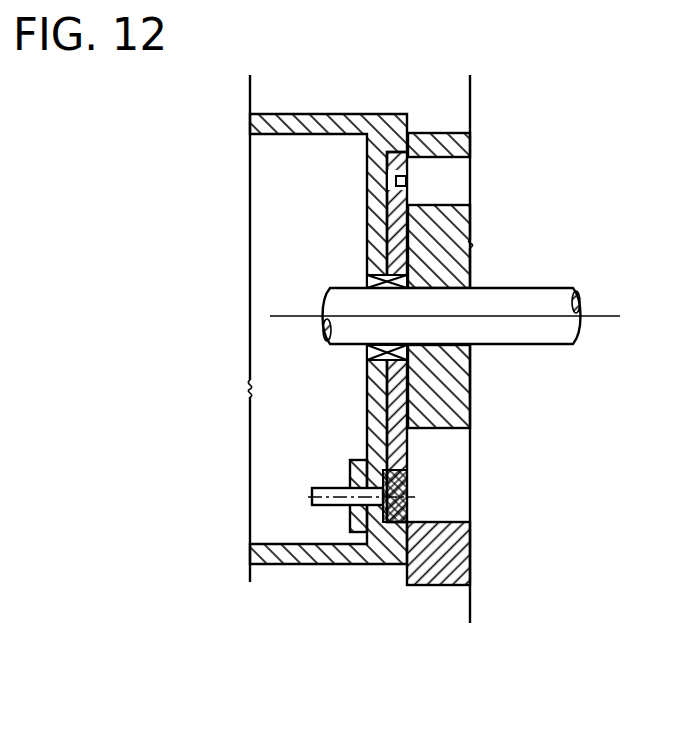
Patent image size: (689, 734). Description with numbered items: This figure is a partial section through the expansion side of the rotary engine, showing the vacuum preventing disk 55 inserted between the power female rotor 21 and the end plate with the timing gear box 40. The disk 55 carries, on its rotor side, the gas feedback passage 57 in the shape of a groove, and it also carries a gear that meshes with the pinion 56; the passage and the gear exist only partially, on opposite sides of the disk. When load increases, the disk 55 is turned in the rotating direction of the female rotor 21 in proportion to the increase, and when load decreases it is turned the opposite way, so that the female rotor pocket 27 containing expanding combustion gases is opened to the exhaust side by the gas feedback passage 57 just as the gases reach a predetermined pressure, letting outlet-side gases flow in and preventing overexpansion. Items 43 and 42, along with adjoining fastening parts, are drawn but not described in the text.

The timing gear box 40 is at (345, 113).
The gas feedback passage 57 is at (410, 180).
The female rotor pocket 27 is at (445, 191).
The power female rotor 21 is at (432, 432).
The spacer block 43 is at (350, 462).
The bolt 42 is at (348, 485).
The vacuum preventing disk 55 is at (407, 462).
The pinion 56 is at (393, 530).